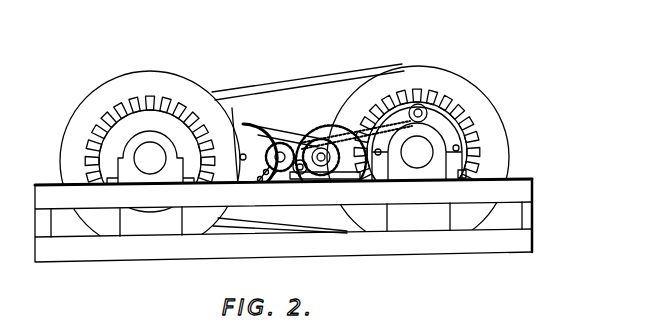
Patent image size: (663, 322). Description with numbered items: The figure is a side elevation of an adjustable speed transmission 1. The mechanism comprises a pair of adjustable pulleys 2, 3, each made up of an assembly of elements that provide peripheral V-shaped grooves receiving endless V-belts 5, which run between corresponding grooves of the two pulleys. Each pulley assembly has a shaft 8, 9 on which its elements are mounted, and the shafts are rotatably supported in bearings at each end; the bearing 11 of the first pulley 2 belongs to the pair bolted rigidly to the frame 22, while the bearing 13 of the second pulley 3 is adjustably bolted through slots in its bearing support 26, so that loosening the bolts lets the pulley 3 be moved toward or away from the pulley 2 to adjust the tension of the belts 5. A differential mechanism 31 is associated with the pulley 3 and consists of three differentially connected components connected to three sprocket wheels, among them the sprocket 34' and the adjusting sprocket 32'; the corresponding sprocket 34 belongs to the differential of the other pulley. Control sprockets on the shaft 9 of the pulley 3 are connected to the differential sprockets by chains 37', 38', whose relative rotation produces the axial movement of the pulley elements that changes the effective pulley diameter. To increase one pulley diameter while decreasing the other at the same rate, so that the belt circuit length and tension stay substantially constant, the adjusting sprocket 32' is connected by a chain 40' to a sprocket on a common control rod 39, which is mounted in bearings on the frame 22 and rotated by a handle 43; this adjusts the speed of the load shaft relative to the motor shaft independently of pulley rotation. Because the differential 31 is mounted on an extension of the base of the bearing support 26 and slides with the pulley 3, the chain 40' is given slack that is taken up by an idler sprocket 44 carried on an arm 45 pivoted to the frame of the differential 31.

The adjustable speed transmission 1 is at (517, 95).
The adjustable pulley 2 is at (80, 97).
The adjustable pulley 3 is at (441, 63).
The endless V-belt 5 is at (292, 82).
The shaft 8 is at (150, 158).
The shaft 9 is at (417, 152).
The bearing 11 is at (130, 180).
The bearing 13 is at (452, 176).
The frame 22 is at (522, 190).
The bearing support 26 is at (370, 181).
The differential mechanism 31 is at (320, 144).
The adjusting sprocket 32' is at (325, 173).
The sprocket wheel 34 is at (227, 125).
The sprocket wheel 34' is at (294, 109).
The control chain 37' is at (356, 114).
The control chain 38' is at (401, 98).
The control rod 39 is at (270, 136).
The control chain 40' is at (288, 132).
The handle 43 is at (258, 185).
The idler sprocket 44 is at (283, 186).
The arm 45 is at (314, 182).